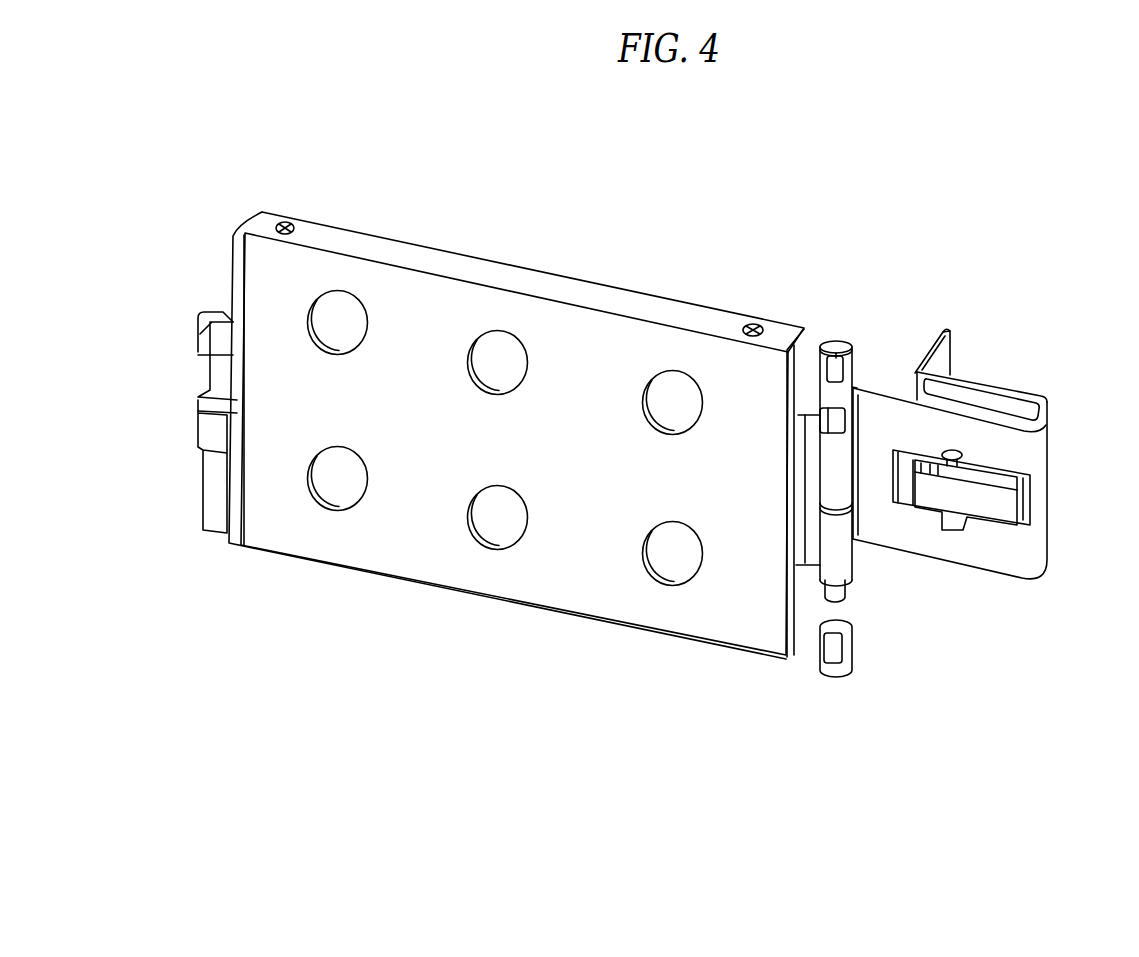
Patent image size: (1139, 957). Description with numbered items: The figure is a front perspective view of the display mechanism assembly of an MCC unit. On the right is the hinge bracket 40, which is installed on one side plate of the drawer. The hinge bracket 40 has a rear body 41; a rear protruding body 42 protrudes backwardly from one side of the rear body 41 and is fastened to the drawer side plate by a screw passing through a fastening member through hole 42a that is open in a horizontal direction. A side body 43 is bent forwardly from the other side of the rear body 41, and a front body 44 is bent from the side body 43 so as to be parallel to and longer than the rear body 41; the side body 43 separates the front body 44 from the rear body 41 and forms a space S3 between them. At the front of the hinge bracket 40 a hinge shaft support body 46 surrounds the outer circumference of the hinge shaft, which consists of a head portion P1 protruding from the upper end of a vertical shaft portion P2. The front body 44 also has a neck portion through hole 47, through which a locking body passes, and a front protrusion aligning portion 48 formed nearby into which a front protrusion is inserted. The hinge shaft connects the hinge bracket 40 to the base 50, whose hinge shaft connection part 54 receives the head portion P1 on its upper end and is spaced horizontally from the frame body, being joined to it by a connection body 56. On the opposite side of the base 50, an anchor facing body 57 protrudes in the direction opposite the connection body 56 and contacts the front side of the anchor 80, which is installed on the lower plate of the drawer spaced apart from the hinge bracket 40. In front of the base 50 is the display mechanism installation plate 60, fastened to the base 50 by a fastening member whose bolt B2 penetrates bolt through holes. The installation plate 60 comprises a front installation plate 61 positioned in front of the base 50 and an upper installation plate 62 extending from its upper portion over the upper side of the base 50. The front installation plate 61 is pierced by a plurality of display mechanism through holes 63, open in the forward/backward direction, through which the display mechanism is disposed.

The hinge bracket 40 is at (1005, 572).
The rear body 41 is at (1018, 395).
The rear protruding body 42 is at (945, 328).
The fastening member through hole 42a is at (945, 357).
The side body 43 is at (1037, 500).
The front body 44 is at (987, 558).
The hinge shaft support body 46 is at (838, 537).
The neck portion through hole 47 is at (932, 493).
The front protrusion aligning portion 48 is at (962, 456).
The base 50 is at (740, 731).
The hinge shaft connection part 54 is at (852, 385).
The connection body 56 is at (808, 616).
The anchor facing body 57 is at (212, 340).
The display mechanism installation plate 60 is at (393, 114).
The front installation plate 61 is at (440, 300).
The upper installation plate 62 is at (403, 255).
The display mechanism through hole 63 is at (336, 306).
The anchor 80 is at (210, 492).
The bolt B2 is at (285, 222).
The head portion P1 is at (834, 350).
The vertical shaft portion P2 is at (804, 335).
The space S3 is at (978, 395).